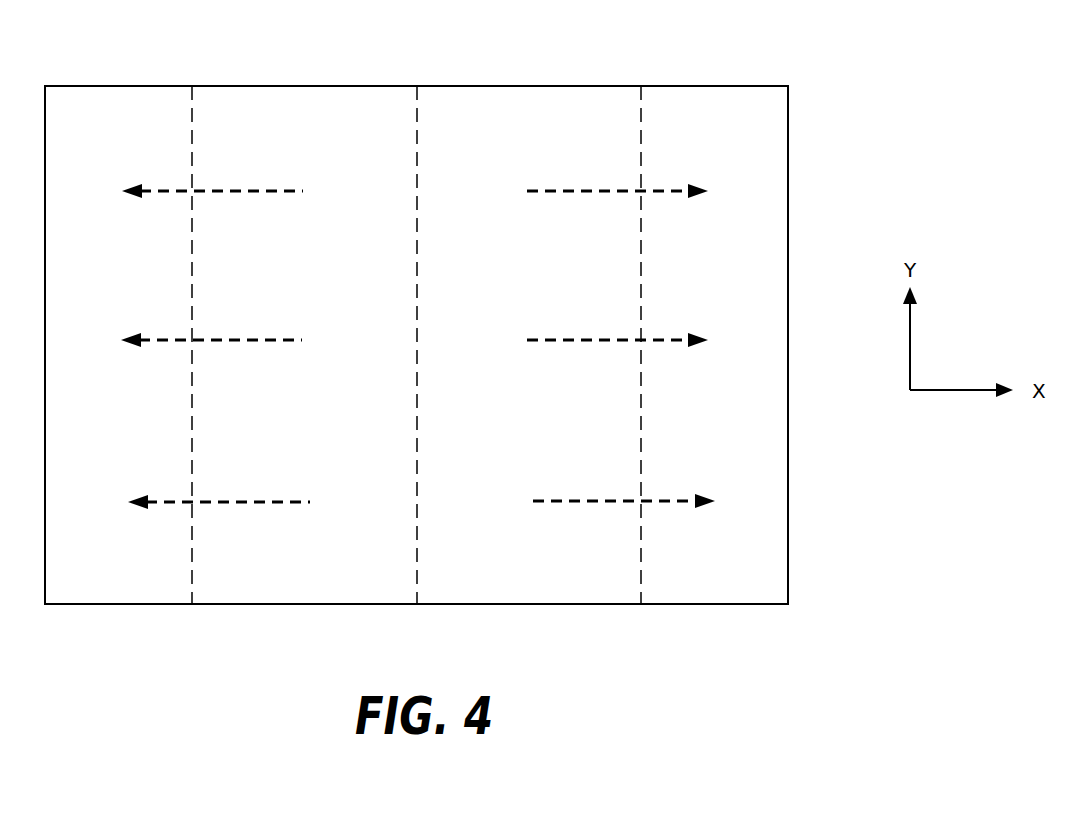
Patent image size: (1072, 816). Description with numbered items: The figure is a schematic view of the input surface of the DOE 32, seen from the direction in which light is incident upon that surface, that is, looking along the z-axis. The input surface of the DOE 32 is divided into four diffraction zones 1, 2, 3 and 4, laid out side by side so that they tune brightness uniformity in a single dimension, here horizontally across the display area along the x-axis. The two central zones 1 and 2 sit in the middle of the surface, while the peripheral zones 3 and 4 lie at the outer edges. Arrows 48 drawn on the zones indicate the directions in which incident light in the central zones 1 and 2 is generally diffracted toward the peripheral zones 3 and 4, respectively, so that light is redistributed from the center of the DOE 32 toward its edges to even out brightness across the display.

The DOE 32 is at (815, 58).
The diffraction zone 1 is at (290, 86).
The diffraction zone 2 is at (518, 86).
The diffraction zone 3 is at (110, 86).
The diffraction zone 4 is at (690, 86).
The arrows 48 is at (237, 191).